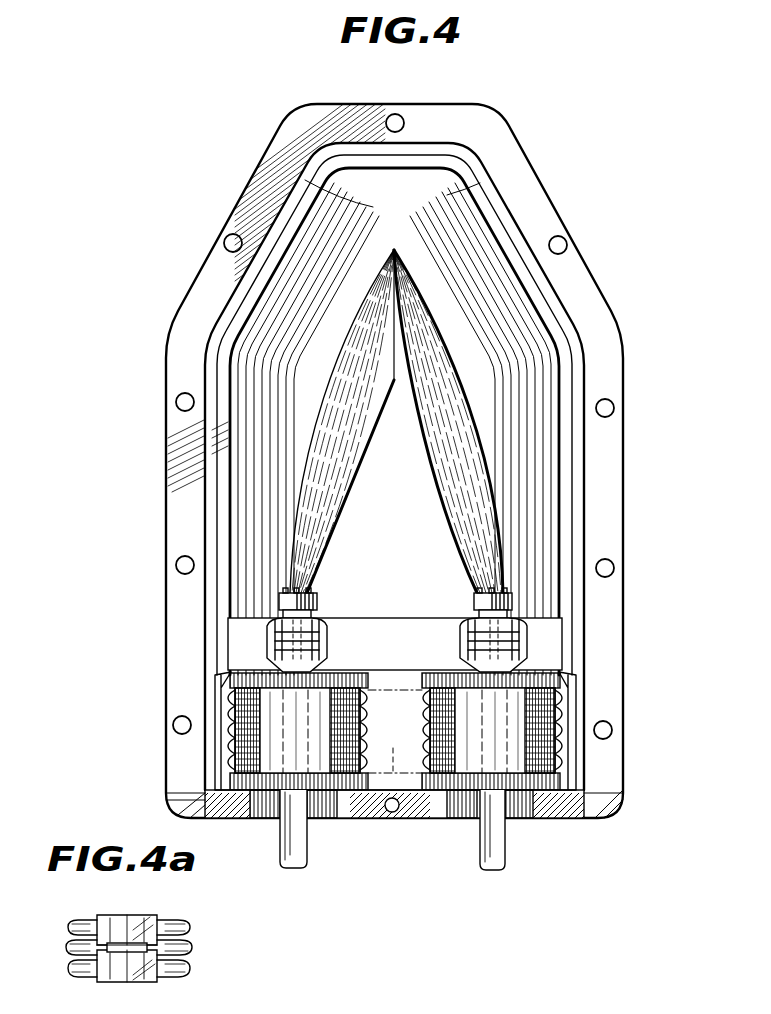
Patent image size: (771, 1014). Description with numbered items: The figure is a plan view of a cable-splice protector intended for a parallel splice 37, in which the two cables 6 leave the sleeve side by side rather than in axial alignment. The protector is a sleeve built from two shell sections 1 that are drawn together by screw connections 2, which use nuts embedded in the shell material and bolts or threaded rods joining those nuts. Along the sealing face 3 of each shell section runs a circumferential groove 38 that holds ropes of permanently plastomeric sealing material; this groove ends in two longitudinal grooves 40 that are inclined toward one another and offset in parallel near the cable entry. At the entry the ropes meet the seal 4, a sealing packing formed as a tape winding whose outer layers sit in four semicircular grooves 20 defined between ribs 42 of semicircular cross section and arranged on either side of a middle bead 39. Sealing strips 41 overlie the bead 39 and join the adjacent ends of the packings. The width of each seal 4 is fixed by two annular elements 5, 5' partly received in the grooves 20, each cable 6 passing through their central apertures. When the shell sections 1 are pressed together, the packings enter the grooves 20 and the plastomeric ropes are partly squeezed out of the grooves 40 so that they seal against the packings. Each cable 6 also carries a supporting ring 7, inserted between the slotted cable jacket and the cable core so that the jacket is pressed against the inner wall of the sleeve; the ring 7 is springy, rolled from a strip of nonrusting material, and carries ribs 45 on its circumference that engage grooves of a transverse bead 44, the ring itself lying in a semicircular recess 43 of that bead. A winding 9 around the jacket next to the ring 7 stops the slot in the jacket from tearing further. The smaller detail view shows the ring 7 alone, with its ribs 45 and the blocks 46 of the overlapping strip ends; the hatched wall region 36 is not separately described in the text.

In FIG. 4, the shell section 1 is at (532, 309).
In FIG. 4, the screw connections 2 is at (607, 403).
In FIG. 4, the sealing face 3 is at (606, 509).
In FIG. 4, the seal 4 is at (228, 817).
In FIG. 4, the annular element 5 is at (392, 711).
In FIG. 4, the annular element 5' is at (393, 778).
In FIG. 4, the cable 6 is at (305, 862).
In FIG. 4, the supporting ring 7 is at (460, 648).
In FIG. 4a, the supporting ring 7 is at (60, 966).
In FIG. 4, the winding 9 is at (313, 593).
In FIG. 4, the groove 20 is at (228, 705).
In FIG. 4, the wall section 36 is at (268, 168).
In FIG. 4, the splice 37 is at (425, 322).
In FIG. 4, the groove 38 is at (208, 357).
In FIG. 4, the middle bead 39 is at (405, 792).
In FIG. 4, the longitudinal groove 40 is at (217, 740).
In FIG. 4, the sealing strip 41 is at (395, 749).
In FIG. 4, the rib 42 is at (228, 760).
In FIG. 4, the semicircular recess 43 is at (263, 618).
In FIG. 4, the transverse bead 44 is at (412, 622).
In FIG. 4, the rib 45 is at (333, 640).
In FIG. 4a, the rib 45 is at (70, 928).
In FIG. 4a, the insulator blocks 46 is at (150, 918).